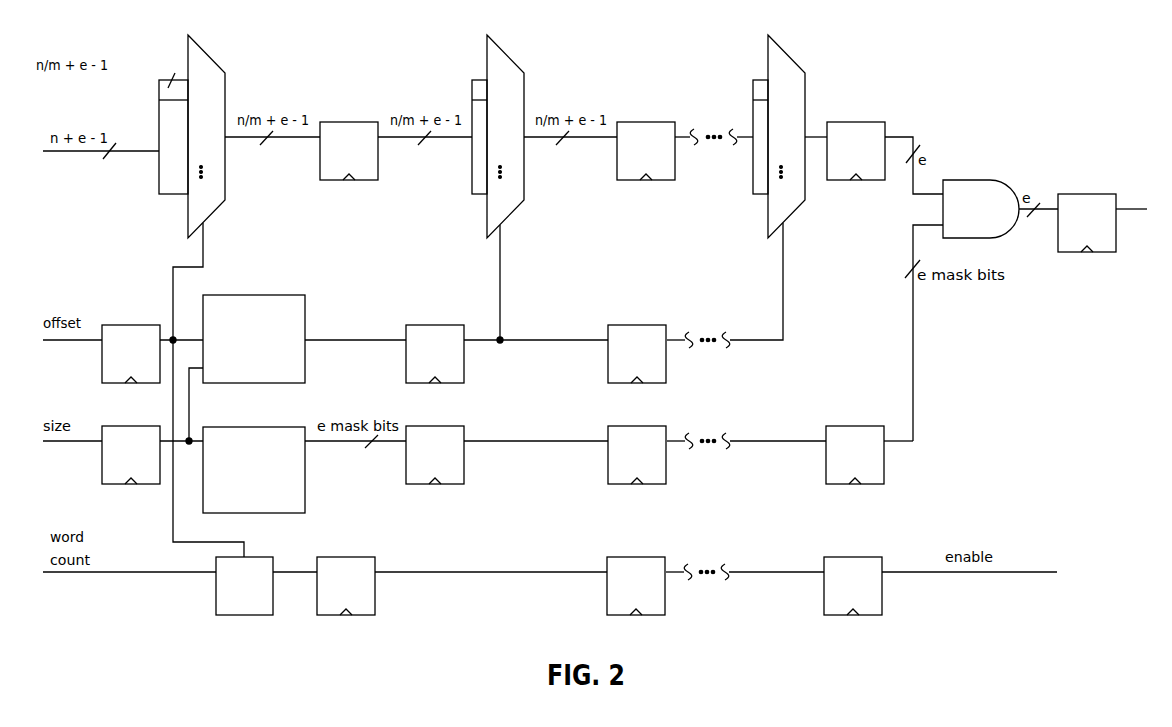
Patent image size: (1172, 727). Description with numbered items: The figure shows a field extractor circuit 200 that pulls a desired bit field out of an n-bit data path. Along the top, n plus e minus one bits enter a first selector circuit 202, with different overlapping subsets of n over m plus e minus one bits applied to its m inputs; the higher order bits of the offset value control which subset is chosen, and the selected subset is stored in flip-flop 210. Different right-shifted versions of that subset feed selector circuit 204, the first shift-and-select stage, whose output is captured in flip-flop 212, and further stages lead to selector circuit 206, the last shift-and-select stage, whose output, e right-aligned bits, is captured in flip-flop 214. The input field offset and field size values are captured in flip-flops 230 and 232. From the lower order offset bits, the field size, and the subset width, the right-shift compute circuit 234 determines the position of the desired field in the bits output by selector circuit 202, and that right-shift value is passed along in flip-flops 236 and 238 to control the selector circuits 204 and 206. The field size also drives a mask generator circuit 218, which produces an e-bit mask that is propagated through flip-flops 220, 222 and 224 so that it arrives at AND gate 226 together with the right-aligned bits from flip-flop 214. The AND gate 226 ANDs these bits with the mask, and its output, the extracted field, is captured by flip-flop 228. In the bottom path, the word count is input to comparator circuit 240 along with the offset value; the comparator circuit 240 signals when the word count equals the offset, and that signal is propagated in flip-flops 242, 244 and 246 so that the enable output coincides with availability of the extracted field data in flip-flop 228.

The field extractor circuit 200 is at (903, 36).
The first selector circuit 202 is at (192, 136).
The selector circuit 204 is at (498, 136).
The selector circuit 206 is at (779, 136).
The flip-flop 210 is at (349, 151).
The flip-flop 212 is at (646, 151).
The flip-flop 214 is at (856, 151).
The mask generator circuit 218 is at (254, 470).
The flip-flop 220 is at (435, 455).
The flip-flop 222 is at (637, 455).
The flip-flop 224 is at (855, 455).
The AND gate 226 is at (981, 209).
The flip-flop 228 is at (1087, 223).
The flip-flop 230 is at (131, 354).
The flip-flop 232 is at (131, 455).
The right-shift compute circuit 234 is at (254, 339).
The flip-flop 236 is at (435, 354).
The flip-flop 238 is at (637, 354).
The comparator circuit 240 is at (244, 586).
The flip-flop 242 is at (346, 586).
The flip-flop 244 is at (636, 586).
The flip-flop 246 is at (853, 586).